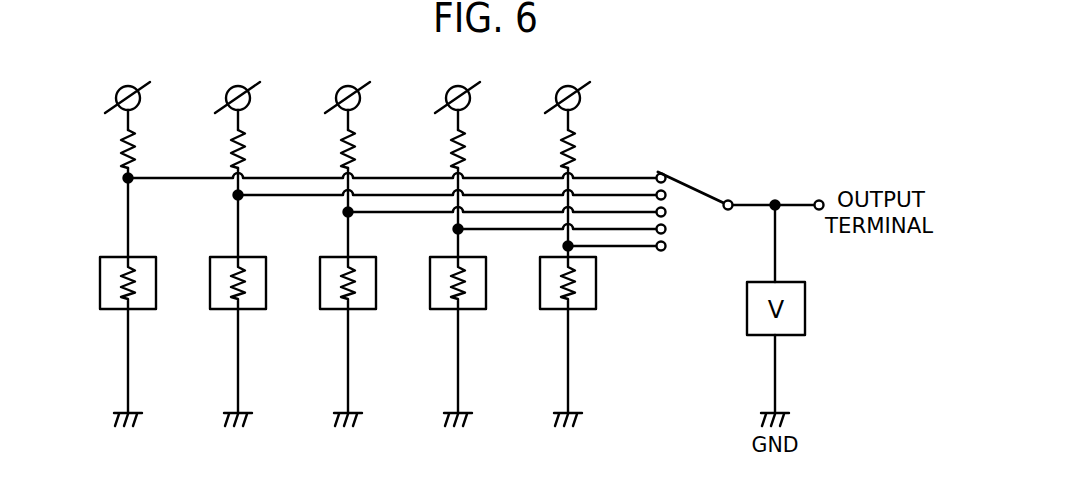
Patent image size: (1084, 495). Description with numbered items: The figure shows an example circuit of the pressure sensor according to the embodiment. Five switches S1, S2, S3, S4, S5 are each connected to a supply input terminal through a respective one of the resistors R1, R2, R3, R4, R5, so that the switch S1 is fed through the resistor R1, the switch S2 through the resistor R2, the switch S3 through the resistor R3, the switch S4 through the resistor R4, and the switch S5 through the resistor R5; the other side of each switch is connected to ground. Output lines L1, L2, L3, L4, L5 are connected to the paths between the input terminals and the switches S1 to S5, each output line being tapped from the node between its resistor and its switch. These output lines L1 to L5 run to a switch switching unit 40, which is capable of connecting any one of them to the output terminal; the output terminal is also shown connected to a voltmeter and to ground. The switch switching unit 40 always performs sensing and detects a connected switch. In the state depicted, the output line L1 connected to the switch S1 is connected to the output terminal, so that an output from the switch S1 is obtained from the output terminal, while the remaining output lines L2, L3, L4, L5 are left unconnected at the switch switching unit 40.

The resistor R1 is at (118, 148).
The resistor R2 is at (228, 148).
The resistor R3 is at (338, 148).
The resistor R4 is at (448, 148).
The resistor R5 is at (558, 148).
The switch S1 is at (100, 296).
The switch S2 is at (210, 296).
The switch S3 is at (320, 296).
The switch S4 is at (430, 296).
The switch S5 is at (540, 296).
The output line L1 is at (593, 177).
The output line L2 is at (610, 194).
The output line L3 is at (635, 211).
The output line L4 is at (618, 230).
The output line L5 is at (647, 247).
The switch switching unit 40 is at (688, 228).